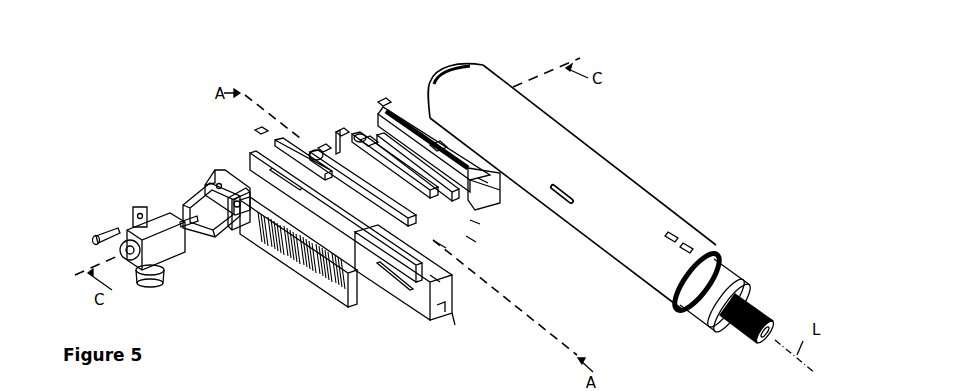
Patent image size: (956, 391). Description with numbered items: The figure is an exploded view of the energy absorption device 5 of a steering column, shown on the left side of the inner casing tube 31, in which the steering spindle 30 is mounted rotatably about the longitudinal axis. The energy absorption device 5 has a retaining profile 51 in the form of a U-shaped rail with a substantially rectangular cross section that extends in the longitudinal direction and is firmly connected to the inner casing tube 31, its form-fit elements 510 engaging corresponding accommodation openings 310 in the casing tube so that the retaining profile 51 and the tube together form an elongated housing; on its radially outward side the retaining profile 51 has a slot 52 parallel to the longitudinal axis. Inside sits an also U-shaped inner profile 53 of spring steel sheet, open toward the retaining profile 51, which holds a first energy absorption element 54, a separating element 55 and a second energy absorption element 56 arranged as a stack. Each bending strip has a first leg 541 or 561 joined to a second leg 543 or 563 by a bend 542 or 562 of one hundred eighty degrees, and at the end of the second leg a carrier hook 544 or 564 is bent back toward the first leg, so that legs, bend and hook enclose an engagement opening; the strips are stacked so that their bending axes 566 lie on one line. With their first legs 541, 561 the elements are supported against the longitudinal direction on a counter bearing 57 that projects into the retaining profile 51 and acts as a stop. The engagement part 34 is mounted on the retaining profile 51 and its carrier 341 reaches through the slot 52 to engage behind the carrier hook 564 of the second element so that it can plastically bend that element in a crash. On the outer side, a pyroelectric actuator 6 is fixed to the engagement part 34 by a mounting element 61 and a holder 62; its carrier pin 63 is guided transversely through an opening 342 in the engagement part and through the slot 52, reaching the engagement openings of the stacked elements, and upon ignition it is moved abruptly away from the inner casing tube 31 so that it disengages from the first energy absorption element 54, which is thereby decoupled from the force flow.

The energy absorption device 5 is at (455, 327).
The pyroelectric actuator 6 is at (140, 235).
The steering spindle 30 is at (723, 283).
The inner casing tube 31 is at (650, 218).
The engagement part 34 is at (318, 283).
The retaining profile 51 is at (437, 280).
The slot 52 is at (383, 283).
The inner profile 53 is at (385, 140).
The first energy absorption element 54 is at (360, 133).
The separating element 55 is at (340, 150).
The second energy absorption element 56 is at (310, 155).
The counter bearing 57 is at (487, 180).
The mounting element 61 is at (107, 233).
The holder 62 is at (193, 190).
The carrier pin 63 is at (190, 227).
The accommodation openings 310 is at (570, 195).
The carrier 341 is at (240, 185).
The opening 342 is at (242, 217).
The form-fit elements 510 is at (440, 245).
The first leg 541 is at (475, 170).
The bend 542 is at (350, 140).
The second leg 543 is at (438, 147).
The carrier hook 544 is at (640, 276).
The first leg 561 is at (470, 220).
The bend 562 is at (270, 130).
The second leg 563 is at (336, 150).
The carrier hook 564 is at (470, 240).
The bending axis 566 is at (322, 150).